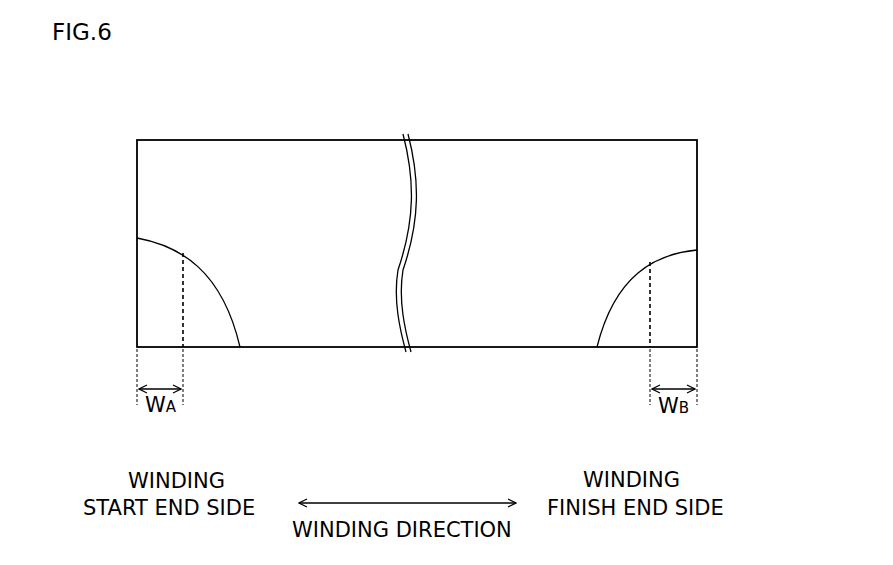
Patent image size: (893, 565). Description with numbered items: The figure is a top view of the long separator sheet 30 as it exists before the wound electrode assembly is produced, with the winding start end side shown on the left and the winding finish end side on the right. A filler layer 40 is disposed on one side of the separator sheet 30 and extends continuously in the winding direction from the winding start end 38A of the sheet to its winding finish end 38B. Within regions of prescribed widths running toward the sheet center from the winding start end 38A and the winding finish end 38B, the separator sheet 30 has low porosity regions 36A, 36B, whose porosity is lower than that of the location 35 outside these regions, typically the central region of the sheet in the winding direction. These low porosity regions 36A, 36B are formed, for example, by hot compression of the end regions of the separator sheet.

The separator sheet 30 is at (232, 350).
The location outside the low porosity regions 35 is at (210, 350).
The low porosity region 36A is at (143, 322).
The low porosity region 36B is at (690, 327).
The winding start end 38A is at (137, 284).
The winding finish end 38B is at (697, 293).
The filler layer 40 is at (283, 160).